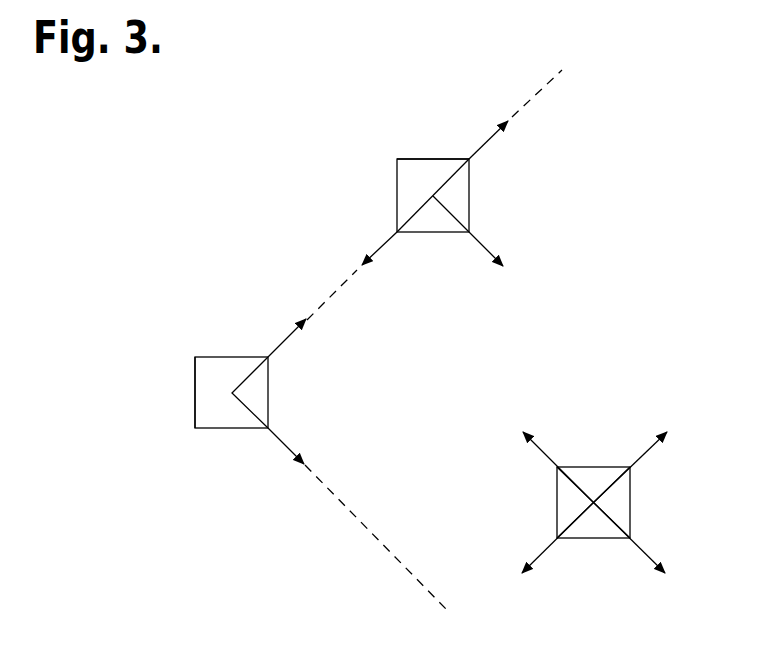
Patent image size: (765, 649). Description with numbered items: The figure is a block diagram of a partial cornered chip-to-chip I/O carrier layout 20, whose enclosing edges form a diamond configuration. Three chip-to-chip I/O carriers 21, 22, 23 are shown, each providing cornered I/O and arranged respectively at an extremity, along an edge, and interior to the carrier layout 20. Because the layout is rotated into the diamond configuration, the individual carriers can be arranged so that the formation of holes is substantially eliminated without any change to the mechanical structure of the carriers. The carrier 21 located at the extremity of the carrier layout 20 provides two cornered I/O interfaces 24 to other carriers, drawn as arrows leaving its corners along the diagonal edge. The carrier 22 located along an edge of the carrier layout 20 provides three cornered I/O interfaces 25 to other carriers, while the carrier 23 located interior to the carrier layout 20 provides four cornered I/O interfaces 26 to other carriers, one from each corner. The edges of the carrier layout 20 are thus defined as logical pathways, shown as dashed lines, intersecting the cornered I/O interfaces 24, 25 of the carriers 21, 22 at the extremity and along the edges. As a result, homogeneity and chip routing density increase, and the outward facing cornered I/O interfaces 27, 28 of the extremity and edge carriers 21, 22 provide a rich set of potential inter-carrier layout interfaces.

The cornered chip-to-chip I/O carrier layout 20 is at (66, 111).
The extremity carrier 21 is at (196, 388).
The edge carrier 22 is at (397, 190).
The interior carrier 23 is at (632, 497).
The cornered I/O interfaces of extremity carrier 24 is at (276, 347).
The cornered I/O interfaces of edge carrier 25 is at (474, 168).
The cornered I/O interfaces of interior carrier 26 is at (630, 452).
The outward facing cornered I/O interfaces of extremity carrier 27 is at (193, 346).
The outward facing cornered I/O interface of edge carrier 28 is at (397, 148).